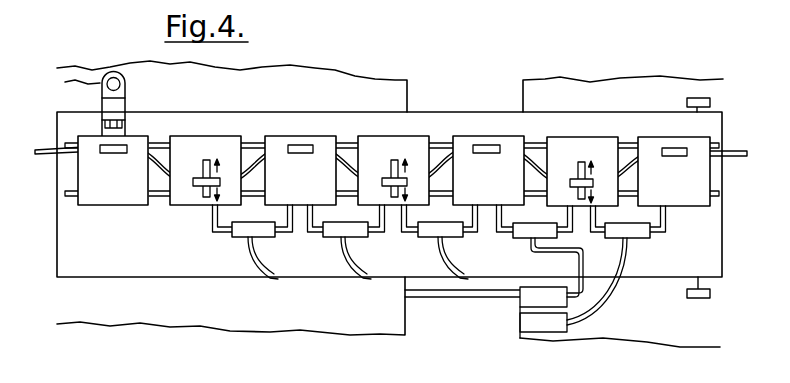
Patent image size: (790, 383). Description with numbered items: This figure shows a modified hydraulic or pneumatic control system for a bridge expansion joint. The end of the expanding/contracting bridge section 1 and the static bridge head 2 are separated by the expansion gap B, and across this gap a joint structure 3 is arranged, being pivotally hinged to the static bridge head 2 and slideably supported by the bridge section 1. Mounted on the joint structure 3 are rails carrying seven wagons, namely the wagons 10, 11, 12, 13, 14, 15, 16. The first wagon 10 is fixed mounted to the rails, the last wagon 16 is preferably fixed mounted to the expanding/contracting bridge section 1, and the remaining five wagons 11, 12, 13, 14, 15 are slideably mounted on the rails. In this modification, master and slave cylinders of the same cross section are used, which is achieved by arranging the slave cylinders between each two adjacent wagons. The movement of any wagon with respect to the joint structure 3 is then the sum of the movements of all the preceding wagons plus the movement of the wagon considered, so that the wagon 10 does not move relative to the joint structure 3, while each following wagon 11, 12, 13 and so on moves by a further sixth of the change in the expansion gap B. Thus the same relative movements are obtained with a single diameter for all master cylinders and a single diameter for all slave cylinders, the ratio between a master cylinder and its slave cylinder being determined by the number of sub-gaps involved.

The expanding/contracting bridge section 1 is at (231, 306).
The static bridge head 2 is at (663, 324).
The joint structure 3 is at (104, 270).
The first wagon 10 is at (672, 195).
The wagon 11 is at (580, 151).
The wagon 12 is at (486, 192).
The wagon 13 is at (391, 150).
The wagon 14 is at (298, 192).
The wagon 15 is at (204, 148).
The last wagon 16 is at (111, 192).
The expansion gap B is at (495, 328).